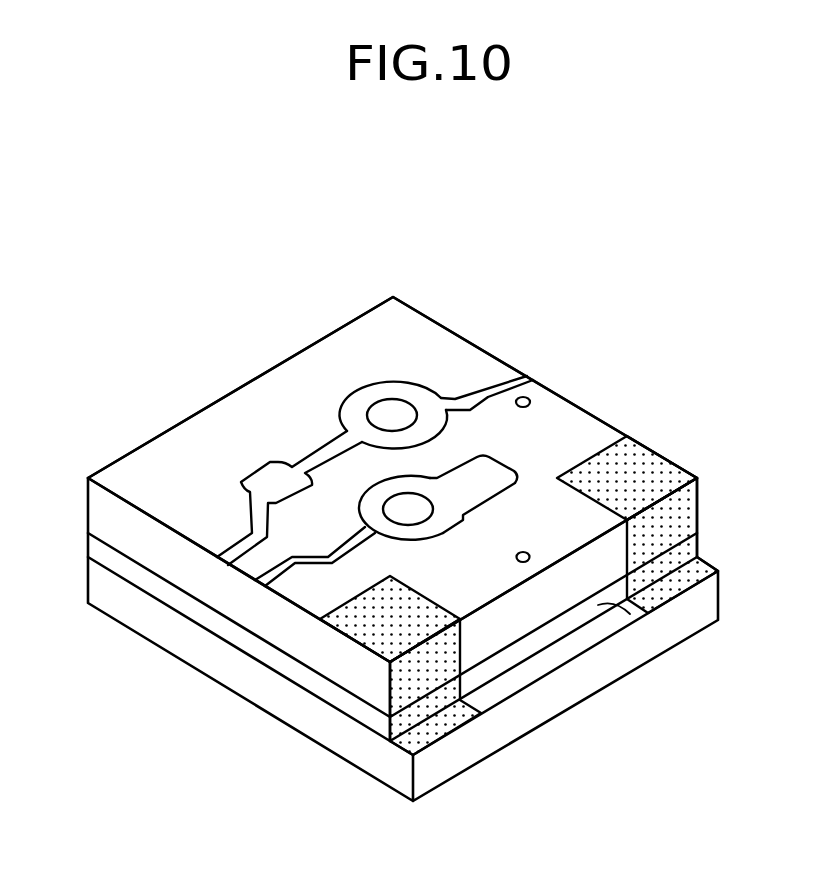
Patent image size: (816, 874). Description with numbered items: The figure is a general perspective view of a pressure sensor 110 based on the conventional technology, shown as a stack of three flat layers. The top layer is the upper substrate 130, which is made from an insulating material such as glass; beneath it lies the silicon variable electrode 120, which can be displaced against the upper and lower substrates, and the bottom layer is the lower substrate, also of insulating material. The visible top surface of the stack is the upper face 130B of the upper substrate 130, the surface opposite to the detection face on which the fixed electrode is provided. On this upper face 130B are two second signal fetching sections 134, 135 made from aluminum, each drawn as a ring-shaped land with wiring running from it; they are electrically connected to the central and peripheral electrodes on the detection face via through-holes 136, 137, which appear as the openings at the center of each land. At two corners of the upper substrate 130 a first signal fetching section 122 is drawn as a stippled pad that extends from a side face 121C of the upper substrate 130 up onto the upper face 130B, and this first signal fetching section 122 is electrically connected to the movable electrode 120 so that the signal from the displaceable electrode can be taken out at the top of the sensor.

The pressure sensor 110 is at (624, 323).
The variable electrode 120 is at (97, 551).
The side face 121C is at (630, 614).
The first signal fetching section 122 is at (688, 513).
The upper substrate 130 is at (97, 503).
The upper face 130B is at (512, 575).
The second signal fetching section 134 is at (435, 525).
The second signal fetching section 135 is at (358, 398).
The through-hole 136 is at (418, 497).
The through-hole 137 is at (388, 401).